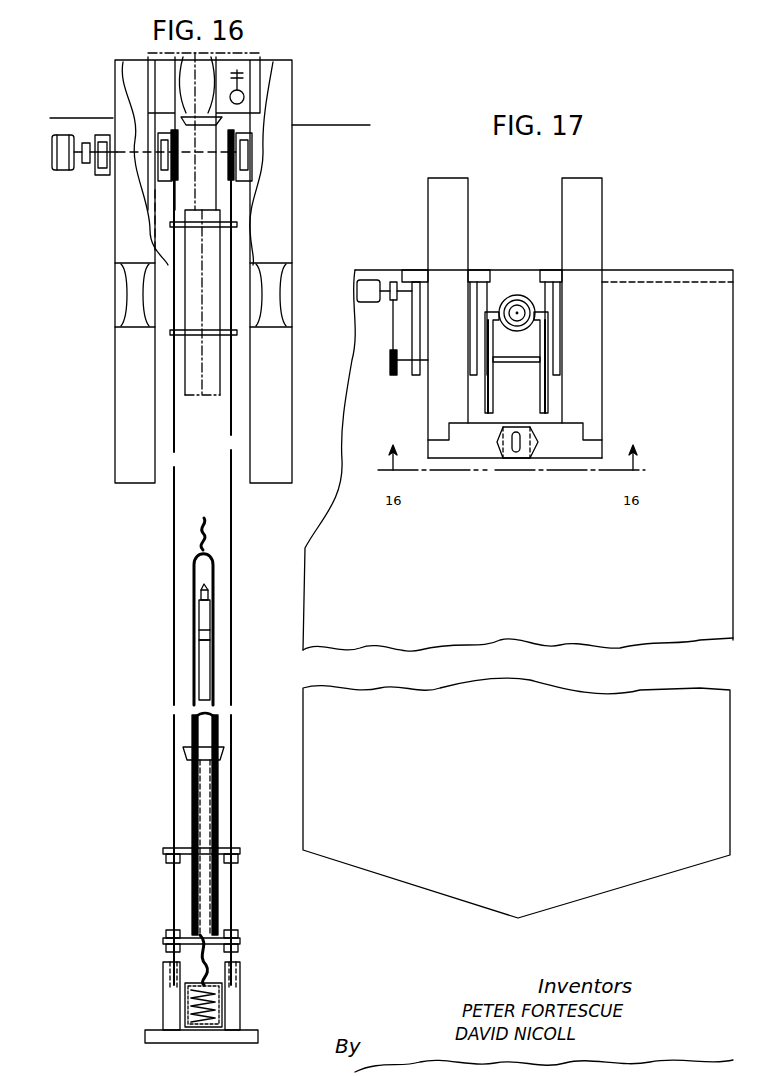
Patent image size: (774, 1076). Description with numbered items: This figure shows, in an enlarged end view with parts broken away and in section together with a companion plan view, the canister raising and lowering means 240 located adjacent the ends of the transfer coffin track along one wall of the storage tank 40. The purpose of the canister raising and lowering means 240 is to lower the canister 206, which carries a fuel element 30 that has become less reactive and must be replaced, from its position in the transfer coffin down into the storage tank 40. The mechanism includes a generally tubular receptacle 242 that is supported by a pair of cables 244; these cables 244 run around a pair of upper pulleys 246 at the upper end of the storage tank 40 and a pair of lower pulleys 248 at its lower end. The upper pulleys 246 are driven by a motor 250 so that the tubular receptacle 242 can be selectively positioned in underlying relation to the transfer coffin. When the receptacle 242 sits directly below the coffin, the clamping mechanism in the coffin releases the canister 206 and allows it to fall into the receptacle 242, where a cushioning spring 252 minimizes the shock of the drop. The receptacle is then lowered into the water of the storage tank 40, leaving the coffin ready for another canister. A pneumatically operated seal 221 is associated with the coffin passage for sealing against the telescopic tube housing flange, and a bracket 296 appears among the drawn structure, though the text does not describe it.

In FIG. 16, the fuel element 30 is at (205, 666).
In FIG. 17, the storage tank 40 is at (518, 594).
In FIG. 16, the canister 206 is at (214, 618).
In FIG. 16, the pneumatically operated seal 221 is at (165, 78).
In FIG. 16, the canister raising and lowering means 240 is at (166, 543).
In FIG. 17, the canister raising and lowering means 240 is at (552, 228).
In FIG. 16, the tubular receptacle 242 is at (245, 245).
In FIG. 17, the tubular receptacle 242 is at (516, 295).
In FIG. 16, the cables 244 is at (170, 436).
In FIG. 17, the cables 244 is at (550, 390).
In FIG. 16, the upper pulleys 246 is at (240, 140).
In FIG. 16, the lower pulleys 248 is at (170, 956).
In FIG. 16, the motor 250 is at (70, 176).
In FIG. 17, the motor 250 is at (365, 280).
In FIG. 16, the spring 252 is at (220, 1010).
In FIG. 17, the bracket 296 is at (550, 405).